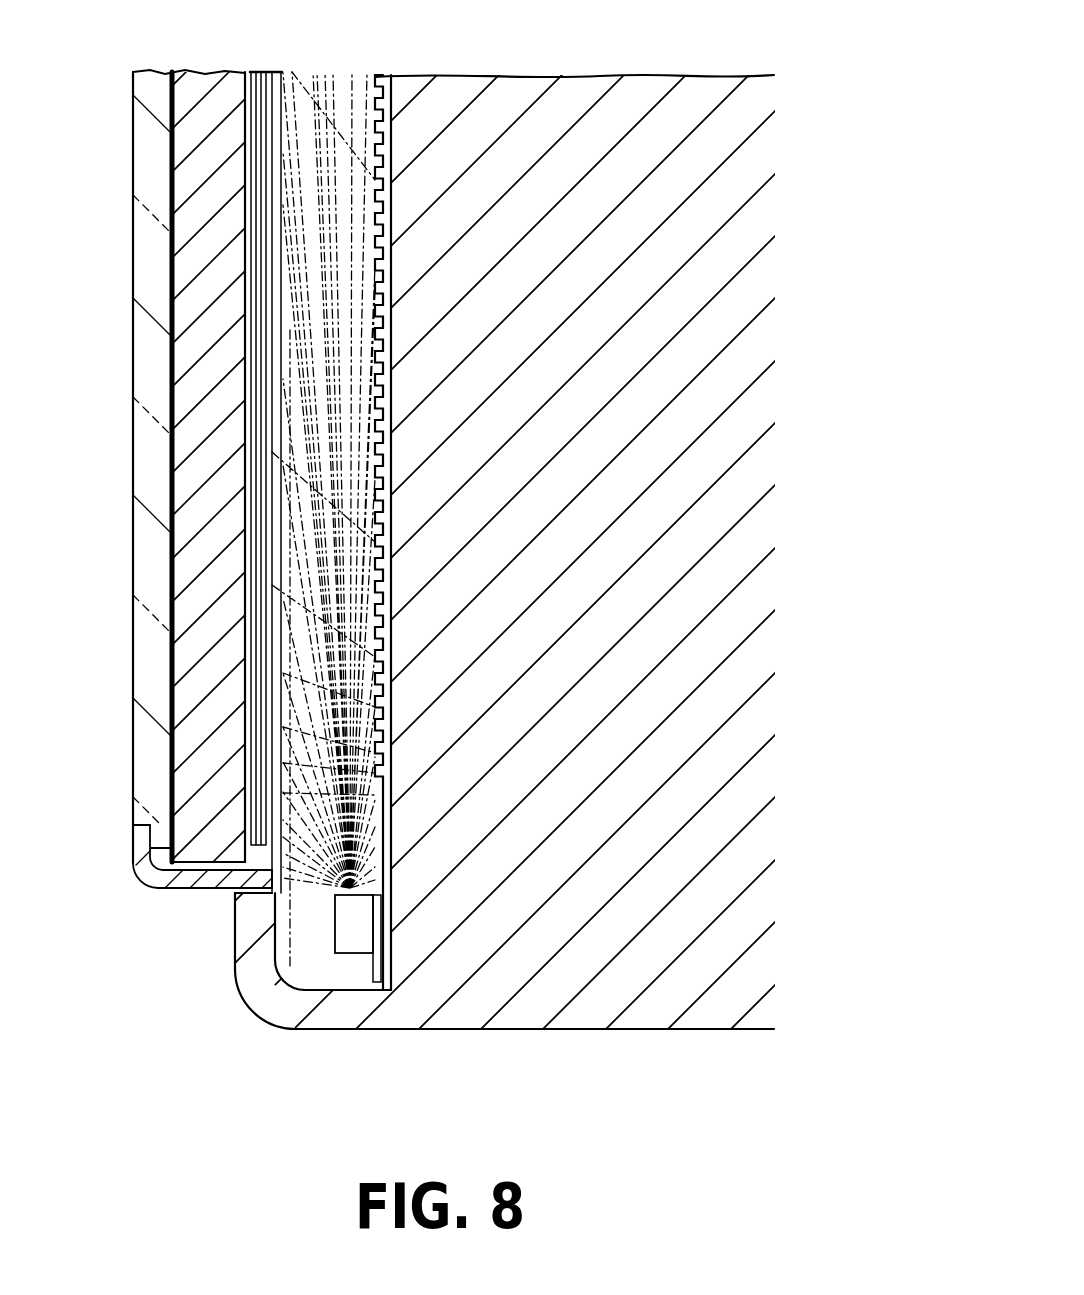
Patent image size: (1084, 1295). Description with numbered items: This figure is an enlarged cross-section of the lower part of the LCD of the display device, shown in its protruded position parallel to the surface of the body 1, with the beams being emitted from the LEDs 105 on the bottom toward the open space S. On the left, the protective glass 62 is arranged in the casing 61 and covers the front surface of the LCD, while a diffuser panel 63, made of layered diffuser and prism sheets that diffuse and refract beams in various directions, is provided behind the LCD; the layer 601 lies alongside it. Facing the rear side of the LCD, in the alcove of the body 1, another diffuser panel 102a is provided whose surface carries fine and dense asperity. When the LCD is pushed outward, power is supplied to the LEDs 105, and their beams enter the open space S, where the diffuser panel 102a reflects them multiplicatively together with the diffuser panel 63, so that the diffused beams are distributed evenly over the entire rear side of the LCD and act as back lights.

The body 1 is at (668, 997).
The casing 61 is at (173, 883).
The protective glass 62 is at (148, 381).
The housing wall 601 is at (193, 83).
The diffuser panel 63 is at (260, 67).
The diffuser panel 102a is at (392, 875).
The LEDs 105 is at (351, 938).
The open space S is at (336, 153).